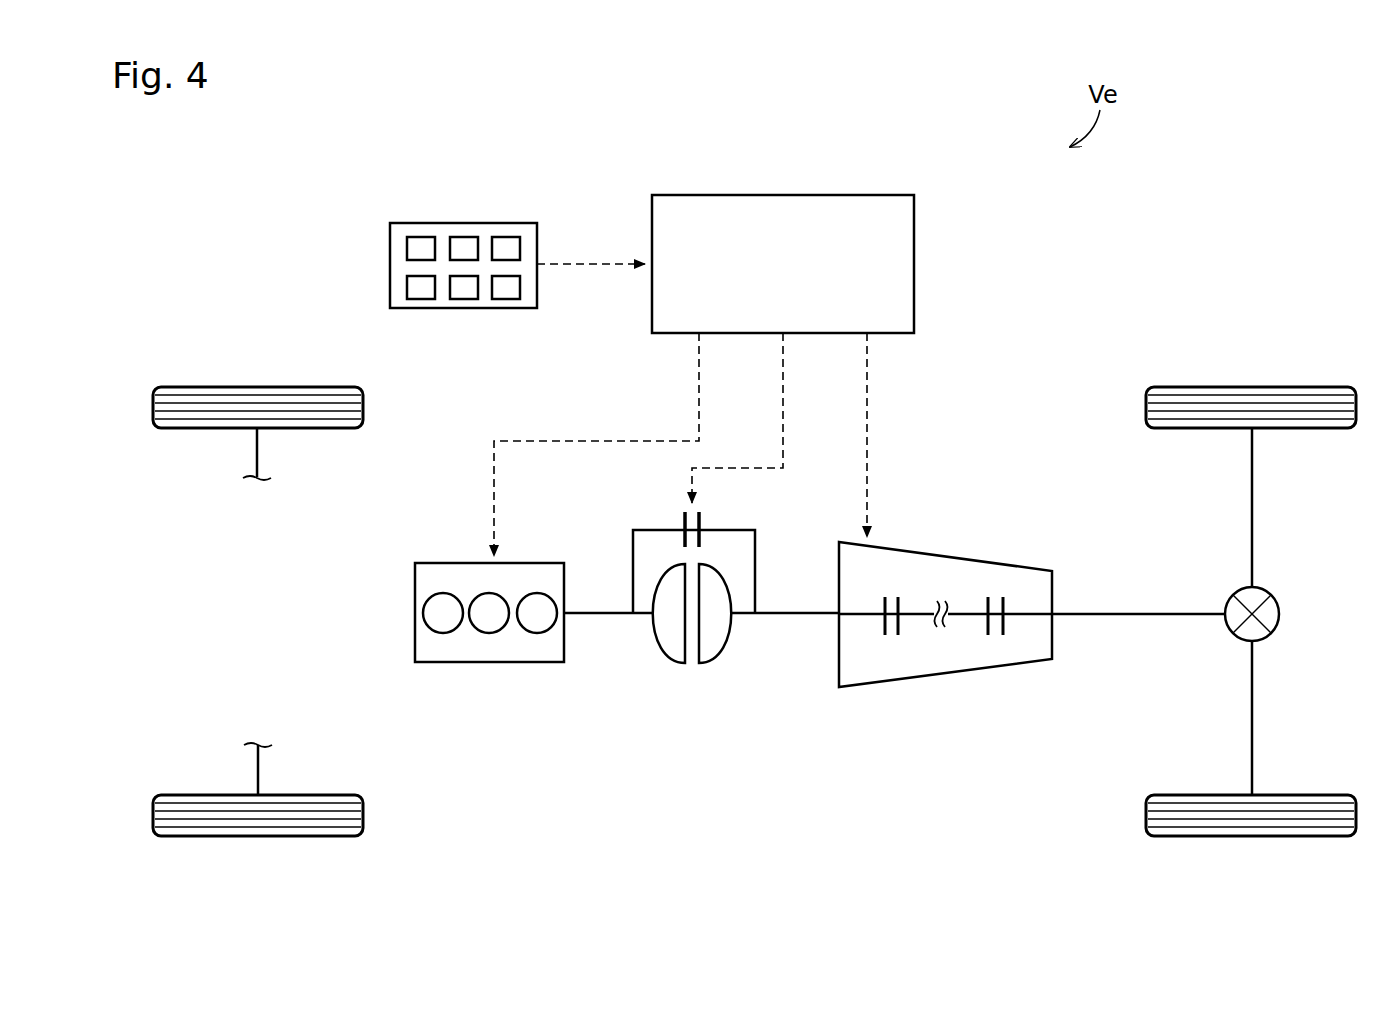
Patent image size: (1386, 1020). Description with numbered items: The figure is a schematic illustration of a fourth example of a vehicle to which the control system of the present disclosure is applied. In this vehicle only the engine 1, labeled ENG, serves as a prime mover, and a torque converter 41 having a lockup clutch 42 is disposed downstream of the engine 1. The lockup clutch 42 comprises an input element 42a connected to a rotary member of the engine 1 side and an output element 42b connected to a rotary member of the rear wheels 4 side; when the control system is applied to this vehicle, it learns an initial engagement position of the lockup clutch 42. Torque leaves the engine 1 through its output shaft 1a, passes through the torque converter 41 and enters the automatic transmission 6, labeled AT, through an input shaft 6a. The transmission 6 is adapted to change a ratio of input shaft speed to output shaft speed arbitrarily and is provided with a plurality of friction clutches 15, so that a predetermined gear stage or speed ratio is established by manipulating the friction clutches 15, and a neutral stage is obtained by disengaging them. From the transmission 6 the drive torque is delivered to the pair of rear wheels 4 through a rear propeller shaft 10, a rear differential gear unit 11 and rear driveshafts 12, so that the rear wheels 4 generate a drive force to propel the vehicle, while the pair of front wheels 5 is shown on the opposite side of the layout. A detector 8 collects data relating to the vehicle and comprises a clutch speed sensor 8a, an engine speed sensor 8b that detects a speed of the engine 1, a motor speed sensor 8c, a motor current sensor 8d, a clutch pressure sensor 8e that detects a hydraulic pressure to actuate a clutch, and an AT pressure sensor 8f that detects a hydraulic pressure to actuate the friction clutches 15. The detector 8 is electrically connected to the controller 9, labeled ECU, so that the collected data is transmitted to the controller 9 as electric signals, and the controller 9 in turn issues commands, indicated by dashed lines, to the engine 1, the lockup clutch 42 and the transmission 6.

The engine 1 is at (488, 663).
The output shaft 1a is at (602, 614).
The rear wheels 4 is at (1257, 387).
The front wheels 5 is at (265, 386).
The automatic transmission 6 is at (972, 558).
The input shaft 6a is at (795, 616).
The detector 8 is at (537, 238).
The clutch speed sensor 8a is at (420, 237).
The engine speed sensor 8b is at (462, 237).
The motor speed sensor 8c is at (506, 237).
The motor current sensor 8d is at (418, 299).
The clutch pressure sensor 8e is at (461, 299).
The AT pressure sensor 8f is at (505, 299).
The controller 9 is at (914, 262).
The rear propeller shaft 10 is at (1133, 610).
The rear differential gear unit 11 is at (1280, 612).
The rear driveshafts 12 is at (1253, 505).
The friction clutches 15 is at (892, 642).
The torque converter 41 is at (712, 675).
The lockup clutch 42 is at (678, 500).
The input element 42a is at (683, 520).
The output element 42b is at (701, 520).